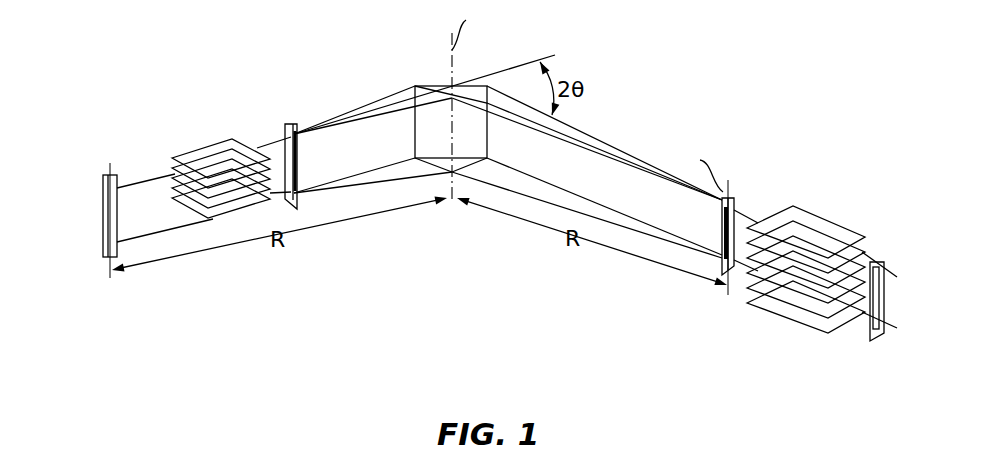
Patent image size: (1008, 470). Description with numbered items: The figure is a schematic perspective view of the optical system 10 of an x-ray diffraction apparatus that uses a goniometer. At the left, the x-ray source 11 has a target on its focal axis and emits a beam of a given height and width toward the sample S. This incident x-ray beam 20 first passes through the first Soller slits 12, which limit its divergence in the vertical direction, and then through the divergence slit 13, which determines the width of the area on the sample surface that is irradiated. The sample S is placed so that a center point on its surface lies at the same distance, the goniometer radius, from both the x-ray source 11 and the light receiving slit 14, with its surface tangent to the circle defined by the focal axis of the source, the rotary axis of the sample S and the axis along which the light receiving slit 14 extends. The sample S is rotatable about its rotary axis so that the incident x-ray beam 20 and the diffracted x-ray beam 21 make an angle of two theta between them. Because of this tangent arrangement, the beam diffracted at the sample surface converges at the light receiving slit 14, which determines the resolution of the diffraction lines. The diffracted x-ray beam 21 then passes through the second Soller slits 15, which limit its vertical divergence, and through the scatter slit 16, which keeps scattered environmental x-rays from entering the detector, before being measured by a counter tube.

The optical system 10 is at (438, 312).
The x-ray source 11 is at (105, 222).
The first Soller slits 12 is at (218, 157).
The divergence slit 13 is at (292, 123).
The light receiving slit 14 is at (733, 197).
The second Soller slits 15 is at (805, 222).
The scatter slit 16 is at (878, 262).
The incident x-ray beam 20 is at (377, 108).
The diffracted x-ray beam 21 is at (592, 145).
The sample S is at (430, 122).